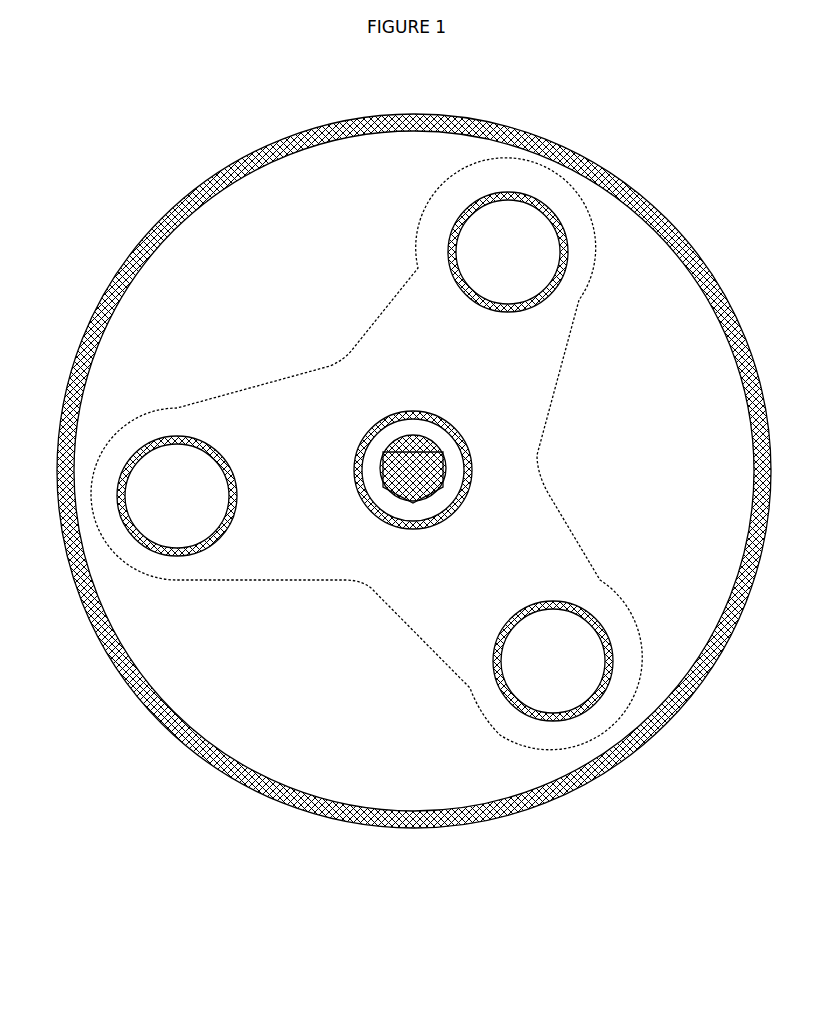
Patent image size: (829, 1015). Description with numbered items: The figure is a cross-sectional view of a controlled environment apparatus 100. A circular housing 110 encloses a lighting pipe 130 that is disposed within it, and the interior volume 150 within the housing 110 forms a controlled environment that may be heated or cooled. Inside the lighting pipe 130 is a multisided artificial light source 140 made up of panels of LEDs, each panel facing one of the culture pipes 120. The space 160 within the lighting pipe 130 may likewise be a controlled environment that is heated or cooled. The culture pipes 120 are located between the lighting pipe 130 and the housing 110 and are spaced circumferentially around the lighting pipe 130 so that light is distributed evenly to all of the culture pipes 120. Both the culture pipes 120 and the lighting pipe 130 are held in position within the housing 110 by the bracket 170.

The controlled environment apparatus 100 is at (265, 859).
The housing 110 is at (468, 817).
The culture pipes 120 is at (502, 193).
The lighting pipe 130 is at (402, 412).
The multisided artificial light source 140 is at (445, 490).
The interior volume 150 is at (220, 712).
The space 160 is at (375, 478).
The bracket 170 is at (533, 173).